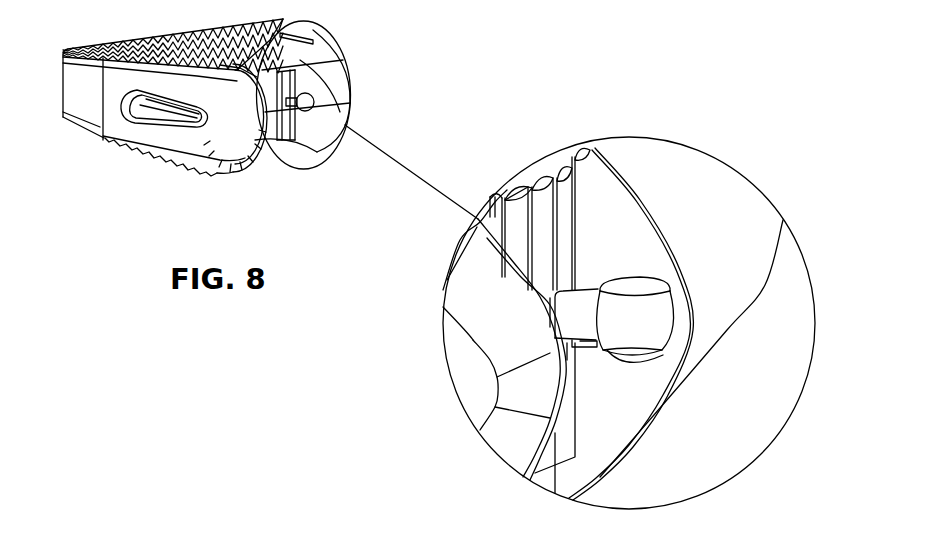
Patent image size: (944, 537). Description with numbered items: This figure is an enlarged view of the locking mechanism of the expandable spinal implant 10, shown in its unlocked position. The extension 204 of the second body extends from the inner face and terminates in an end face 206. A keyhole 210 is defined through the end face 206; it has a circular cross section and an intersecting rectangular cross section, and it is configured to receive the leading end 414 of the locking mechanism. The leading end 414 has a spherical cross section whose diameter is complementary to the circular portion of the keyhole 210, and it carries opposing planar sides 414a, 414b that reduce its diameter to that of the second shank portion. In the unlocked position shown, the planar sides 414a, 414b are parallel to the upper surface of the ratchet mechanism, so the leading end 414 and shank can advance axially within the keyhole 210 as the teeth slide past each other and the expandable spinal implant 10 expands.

The expandable spinal implant 10 is at (127, 165).
The extension 204 is at (710, 185).
The end face 206 is at (613, 447).
The keyhole 210 is at (651, 355).
The leading end 414 is at (652, 322).
The planar side 414a is at (632, 283).
The planar side 414b is at (620, 358).